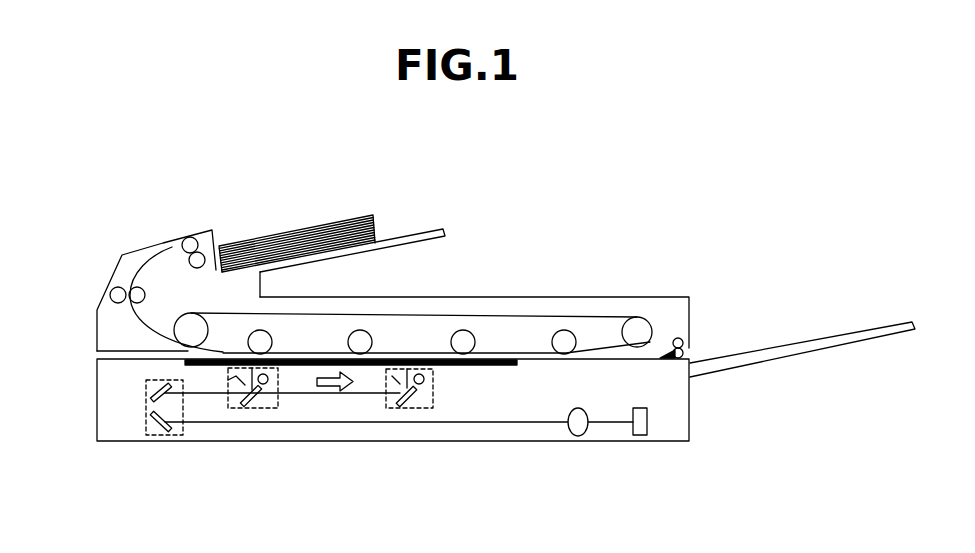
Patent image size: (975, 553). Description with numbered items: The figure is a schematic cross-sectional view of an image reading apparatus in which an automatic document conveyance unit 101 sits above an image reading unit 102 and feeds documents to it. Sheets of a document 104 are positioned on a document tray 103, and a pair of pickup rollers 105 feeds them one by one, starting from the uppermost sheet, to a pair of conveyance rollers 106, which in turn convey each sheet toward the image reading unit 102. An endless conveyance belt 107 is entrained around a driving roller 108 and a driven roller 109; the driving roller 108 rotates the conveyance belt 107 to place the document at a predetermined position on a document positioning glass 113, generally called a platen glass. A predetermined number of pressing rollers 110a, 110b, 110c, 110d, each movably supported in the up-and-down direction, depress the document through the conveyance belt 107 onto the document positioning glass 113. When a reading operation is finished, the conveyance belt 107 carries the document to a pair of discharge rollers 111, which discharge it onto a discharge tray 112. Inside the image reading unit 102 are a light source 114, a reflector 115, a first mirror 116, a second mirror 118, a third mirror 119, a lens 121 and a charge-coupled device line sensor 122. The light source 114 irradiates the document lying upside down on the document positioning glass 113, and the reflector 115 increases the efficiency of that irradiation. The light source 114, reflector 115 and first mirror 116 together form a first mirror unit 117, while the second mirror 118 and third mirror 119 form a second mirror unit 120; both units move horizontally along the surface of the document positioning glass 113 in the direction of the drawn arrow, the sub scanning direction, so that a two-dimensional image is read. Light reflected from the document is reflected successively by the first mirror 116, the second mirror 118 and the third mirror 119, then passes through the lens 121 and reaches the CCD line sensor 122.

The automatic document conveyance unit 101 is at (97, 337).
The image reading unit 102 is at (690, 418).
The document tray 103 is at (425, 232).
The document 104 is at (320, 220).
The pickup rollers 105 is at (180, 245).
The conveyance rollers 106 is at (111, 294).
The conveyance belt 107 is at (458, 317).
The driving roller 108 is at (192, 314).
The driven roller 109 is at (640, 317).
The pressing roller 110a is at (270, 333).
The pressing roller 110b is at (366, 331).
The pressing roller 110c is at (470, 332).
The pressing roller 110d is at (566, 331).
The discharge rollers 111 is at (688, 340).
The discharge tray 112 is at (825, 338).
The document positioning glass 113 is at (462, 366).
The light source 114 is at (267, 386).
The reflector 115 is at (235, 380).
The first mirror 116 is at (256, 408).
The first mirror unit 117 is at (237, 408).
The second mirror 118 is at (146, 388).
The third mirror 119 is at (153, 430).
The second mirror unit 120 is at (170, 436).
The lens 121 is at (578, 437).
The CCD line sensor 122 is at (640, 436).